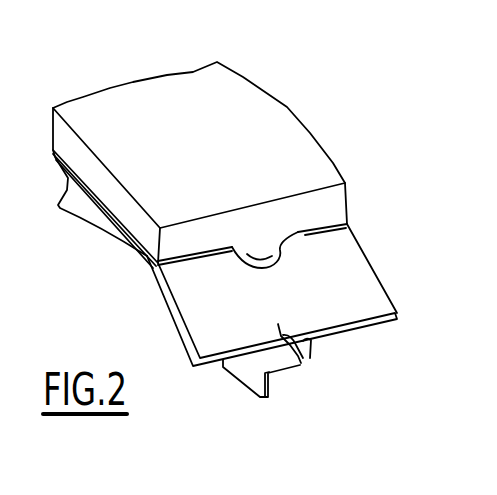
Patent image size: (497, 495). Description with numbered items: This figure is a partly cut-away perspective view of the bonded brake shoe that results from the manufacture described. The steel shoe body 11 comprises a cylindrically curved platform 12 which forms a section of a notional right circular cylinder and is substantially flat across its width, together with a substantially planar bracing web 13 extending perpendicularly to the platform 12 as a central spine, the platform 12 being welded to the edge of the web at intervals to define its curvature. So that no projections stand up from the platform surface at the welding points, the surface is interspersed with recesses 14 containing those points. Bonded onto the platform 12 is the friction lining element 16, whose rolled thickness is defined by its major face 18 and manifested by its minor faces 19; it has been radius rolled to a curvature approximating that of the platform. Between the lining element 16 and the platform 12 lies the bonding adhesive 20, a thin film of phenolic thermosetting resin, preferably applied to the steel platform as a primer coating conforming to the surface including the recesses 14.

The shoe body 11 is at (318, 350).
The platform 12 is at (302, 363).
The bracing web 13 is at (250, 373).
The recesses 14 is at (240, 262).
The friction lining element 16 is at (200, 133).
The major face 18 is at (167, 93).
The minor faces 19 is at (326, 202).
The bonding adhesive 20 is at (346, 238).